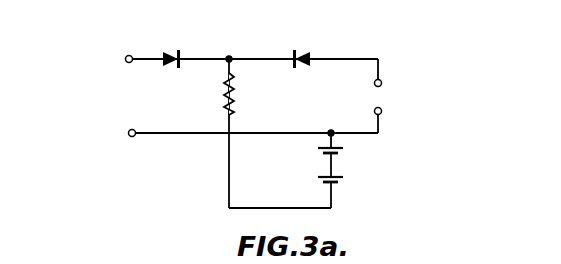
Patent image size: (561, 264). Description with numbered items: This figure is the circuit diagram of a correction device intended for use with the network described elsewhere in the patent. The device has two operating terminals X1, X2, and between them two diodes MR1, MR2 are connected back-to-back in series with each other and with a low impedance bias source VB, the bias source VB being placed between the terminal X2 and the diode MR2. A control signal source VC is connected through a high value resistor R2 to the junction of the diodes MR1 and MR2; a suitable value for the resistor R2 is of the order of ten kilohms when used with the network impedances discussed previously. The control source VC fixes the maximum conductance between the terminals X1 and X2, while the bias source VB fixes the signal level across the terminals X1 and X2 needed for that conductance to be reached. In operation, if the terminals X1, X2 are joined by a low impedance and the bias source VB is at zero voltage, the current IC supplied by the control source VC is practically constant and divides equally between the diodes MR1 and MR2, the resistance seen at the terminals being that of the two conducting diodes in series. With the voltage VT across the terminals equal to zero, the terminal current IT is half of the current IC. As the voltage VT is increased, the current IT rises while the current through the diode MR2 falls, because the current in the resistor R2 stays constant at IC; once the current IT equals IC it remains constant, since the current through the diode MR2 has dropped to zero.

The operating terminal X1 is at (128, 50).
The operating terminal X2 is at (127, 138).
The diode MR1 is at (168, 66).
The diode MR2 is at (305, 63).
The high value resistor R2 is at (235, 100).
The control signal source VC is at (337, 170).
The terminal current IT is at (88, 59).
The terminal voltage VT is at (103, 94).
The low impedance bias source VB is at (411, 95).
The control current IC is at (213, 172).